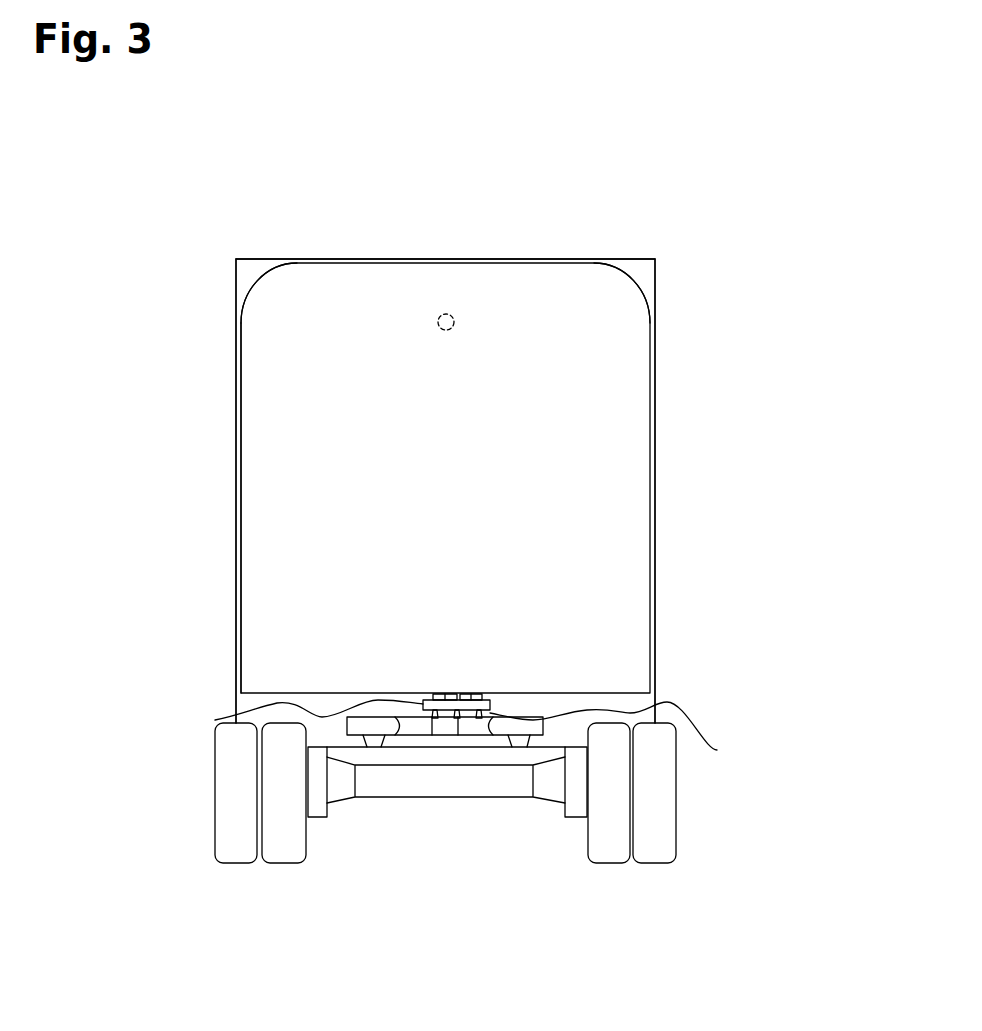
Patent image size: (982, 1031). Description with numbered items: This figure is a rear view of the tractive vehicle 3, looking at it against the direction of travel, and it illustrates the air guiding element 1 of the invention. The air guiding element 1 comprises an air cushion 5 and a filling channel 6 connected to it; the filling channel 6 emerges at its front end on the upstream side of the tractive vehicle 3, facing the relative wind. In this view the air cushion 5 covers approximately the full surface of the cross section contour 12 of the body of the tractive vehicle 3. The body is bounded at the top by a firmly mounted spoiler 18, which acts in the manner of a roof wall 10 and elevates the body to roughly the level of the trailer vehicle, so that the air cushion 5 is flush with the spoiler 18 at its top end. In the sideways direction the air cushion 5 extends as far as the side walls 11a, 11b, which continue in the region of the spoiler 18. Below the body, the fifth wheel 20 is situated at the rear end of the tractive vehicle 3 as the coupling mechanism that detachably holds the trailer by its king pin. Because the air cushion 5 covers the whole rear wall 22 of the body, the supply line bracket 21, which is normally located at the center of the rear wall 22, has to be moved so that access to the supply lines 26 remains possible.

The air guiding element 1 is at (726, 462).
The tractive vehicle 3 is at (195, 523).
The air cushion 5 is at (453, 505).
The filling channel 6 is at (453, 328).
The roof wall 10 is at (445, 227).
The spoiler 18 is at (419, 259).
The cross section contour 12 is at (243, 270).
The rear wall 22 is at (236, 398).
The side wall 11a is at (236, 605).
The side wall 11b is at (656, 630).
The supply line bracket 21 is at (215, 720).
The supply lines 26 is at (488, 713).
The fifth wheel 20 is at (717, 750).